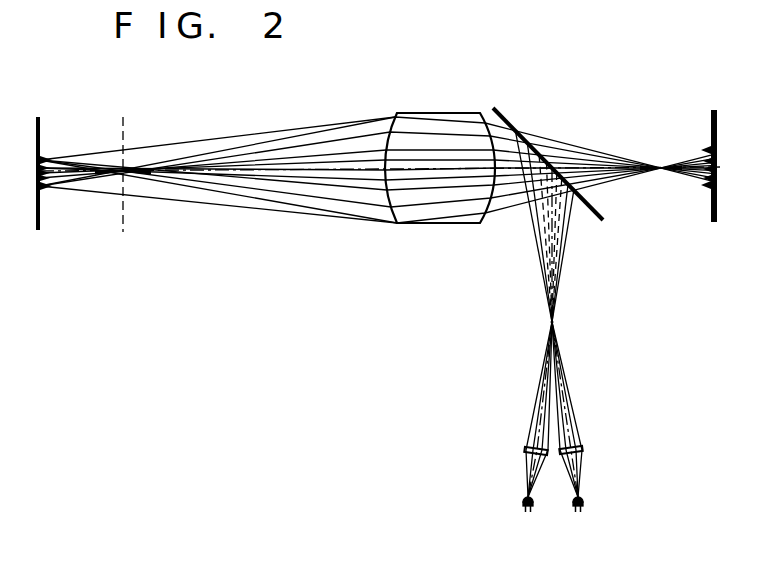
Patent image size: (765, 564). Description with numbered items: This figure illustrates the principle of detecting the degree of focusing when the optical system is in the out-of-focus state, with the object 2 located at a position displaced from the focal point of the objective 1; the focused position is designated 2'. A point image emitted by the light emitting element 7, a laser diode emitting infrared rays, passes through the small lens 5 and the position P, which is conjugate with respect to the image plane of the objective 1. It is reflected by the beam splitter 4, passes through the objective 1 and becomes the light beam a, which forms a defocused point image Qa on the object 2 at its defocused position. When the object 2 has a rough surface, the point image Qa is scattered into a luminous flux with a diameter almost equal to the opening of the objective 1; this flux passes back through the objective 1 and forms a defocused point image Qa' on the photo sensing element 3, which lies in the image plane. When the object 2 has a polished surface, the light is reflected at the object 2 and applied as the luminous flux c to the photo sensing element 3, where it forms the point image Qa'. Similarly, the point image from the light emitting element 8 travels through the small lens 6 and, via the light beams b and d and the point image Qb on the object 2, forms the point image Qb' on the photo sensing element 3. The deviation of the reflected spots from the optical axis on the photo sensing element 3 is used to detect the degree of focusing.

The objective 1 is at (443, 128).
The object 2 is at (45, 156).
The focused position 2' is at (147, 174).
The photo sensing element 3 is at (714, 108).
The beam splitter 4 is at (600, 224).
The small lens 5 is at (522, 454).
The small lens 6 is at (584, 449).
The light emitting element 7 is at (520, 506).
The light emitting element 8 is at (590, 505).
The position conjugate with the image plane P is at (558, 323).
The point image Qa is at (60, 140).
The point image Qb is at (60, 214).
The point image Qa' is at (690, 210).
The point image Qb' is at (689, 131).
The light beam a is at (269, 189).
The light beam b is at (252, 152).
The luminous flux c is at (214, 140).
The light beam d is at (213, 201).